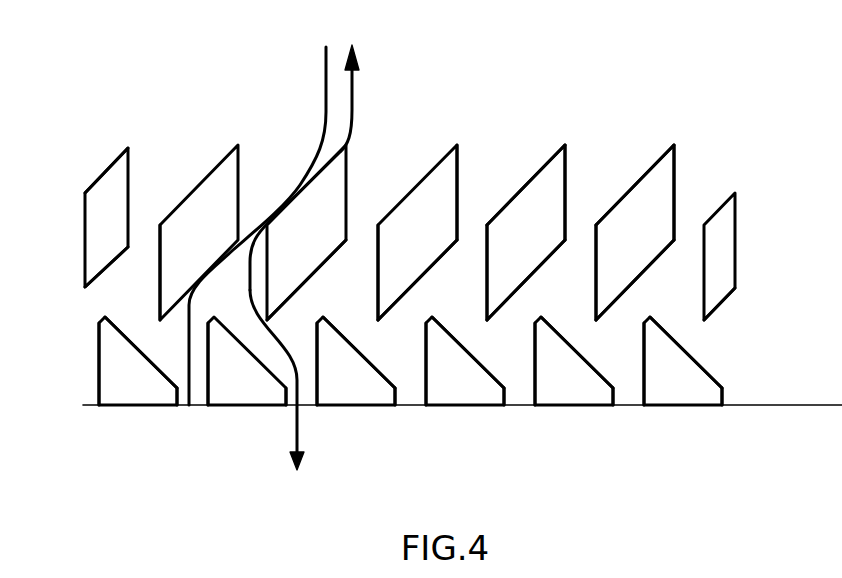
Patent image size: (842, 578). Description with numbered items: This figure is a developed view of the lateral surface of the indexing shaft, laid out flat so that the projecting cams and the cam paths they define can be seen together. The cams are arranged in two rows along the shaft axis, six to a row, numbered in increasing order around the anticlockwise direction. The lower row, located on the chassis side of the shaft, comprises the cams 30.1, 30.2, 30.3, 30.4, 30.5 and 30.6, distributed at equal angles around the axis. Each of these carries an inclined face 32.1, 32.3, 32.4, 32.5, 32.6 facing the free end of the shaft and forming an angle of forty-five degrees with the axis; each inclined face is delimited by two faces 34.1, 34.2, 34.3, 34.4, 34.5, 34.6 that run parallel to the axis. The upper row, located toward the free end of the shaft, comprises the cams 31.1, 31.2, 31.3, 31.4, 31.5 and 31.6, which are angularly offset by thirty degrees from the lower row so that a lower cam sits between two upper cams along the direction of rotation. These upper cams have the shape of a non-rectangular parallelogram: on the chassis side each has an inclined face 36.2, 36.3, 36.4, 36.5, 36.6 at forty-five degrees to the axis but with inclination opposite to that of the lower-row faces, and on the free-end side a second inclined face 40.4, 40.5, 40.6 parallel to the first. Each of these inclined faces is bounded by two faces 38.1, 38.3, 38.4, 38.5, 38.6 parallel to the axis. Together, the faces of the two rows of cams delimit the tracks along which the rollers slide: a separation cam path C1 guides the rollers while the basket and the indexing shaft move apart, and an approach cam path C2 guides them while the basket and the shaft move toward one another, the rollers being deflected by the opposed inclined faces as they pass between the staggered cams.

The cam 30.1 is at (128, 395).
The cam 30.2 is at (240, 395).
The cam 30.3 is at (383, 395).
The cam 30.4 is at (492, 395).
The cam 30.5 is at (601, 395).
The cam 30.6 is at (712, 395).
The cam 31.1 is at (178, 247).
The cam 31.2 is at (287, 247).
The cam 31.3 is at (397, 247).
The cam 31.4 is at (507, 247).
The cam 31.5 is at (616, 247).
The cam 31.6 is at (100, 190).
The inclined face 32.1 is at (125, 335).
The inclined face 32.3 is at (343, 336).
The inclined face 32.4 is at (452, 336).
The inclined face 32.5 is at (561, 336).
The inclined face 32.6 is at (683, 348).
The face parallel to the X-axis 34.1 is at (99, 367).
The face parallel to the X-axis 34.2 is at (293, 398).
The face parallel to the X-axis 34.3 is at (313, 397).
The face parallel to the X-axis 34.4 is at (420, 397).
The face parallel to the X-axis 34.5 is at (530, 397).
The face parallel to the X-axis 34.6 is at (640, 397).
The inclined face 36.2 is at (336, 251).
The inclined face 36.3 is at (446, 251).
The inclined face 36.4 is at (556, 251).
The inclined face 36.5 is at (664, 253).
The inclined face 36.6 is at (97, 285).
The face parallel to the X-axis 38.1 is at (158, 237).
The face parallel to the X-axis 38.3 is at (378, 237).
The face parallel to the X-axis 38.4 is at (487, 237).
The face parallel to the X-axis 38.5 is at (596, 237).
The face parallel to the X-axis 38.6 is at (704, 238).
The second inclined face 40.4 is at (545, 167).
The second inclined face 40.5 is at (652, 165).
The second inclined face 40.6 is at (117, 160).
The separation cam path C1 is at (353, 88).
The approach cam path C2 is at (296, 442).